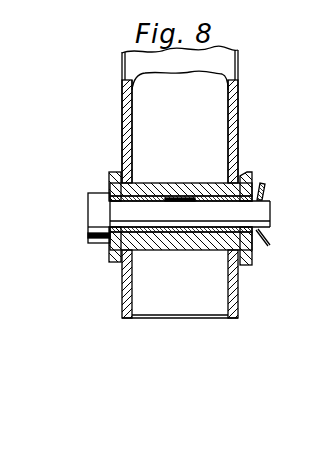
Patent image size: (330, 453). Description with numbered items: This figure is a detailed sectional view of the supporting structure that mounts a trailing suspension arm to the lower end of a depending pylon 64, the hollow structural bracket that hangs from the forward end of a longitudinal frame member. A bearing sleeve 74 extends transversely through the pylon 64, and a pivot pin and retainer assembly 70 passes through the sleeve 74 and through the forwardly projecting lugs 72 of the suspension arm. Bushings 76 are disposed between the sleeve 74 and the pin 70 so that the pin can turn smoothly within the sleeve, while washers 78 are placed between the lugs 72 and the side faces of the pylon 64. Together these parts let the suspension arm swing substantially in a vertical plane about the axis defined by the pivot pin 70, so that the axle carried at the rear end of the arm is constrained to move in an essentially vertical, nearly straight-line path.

The depending pylon 64 is at (208, 65).
The pivot pin and retainer assembly 70 is at (266, 211).
The lugs 72 is at (250, 261).
The bearing sleeve 74 is at (150, 188).
The bushings 76 is at (207, 200).
The washers 78 is at (121, 176).